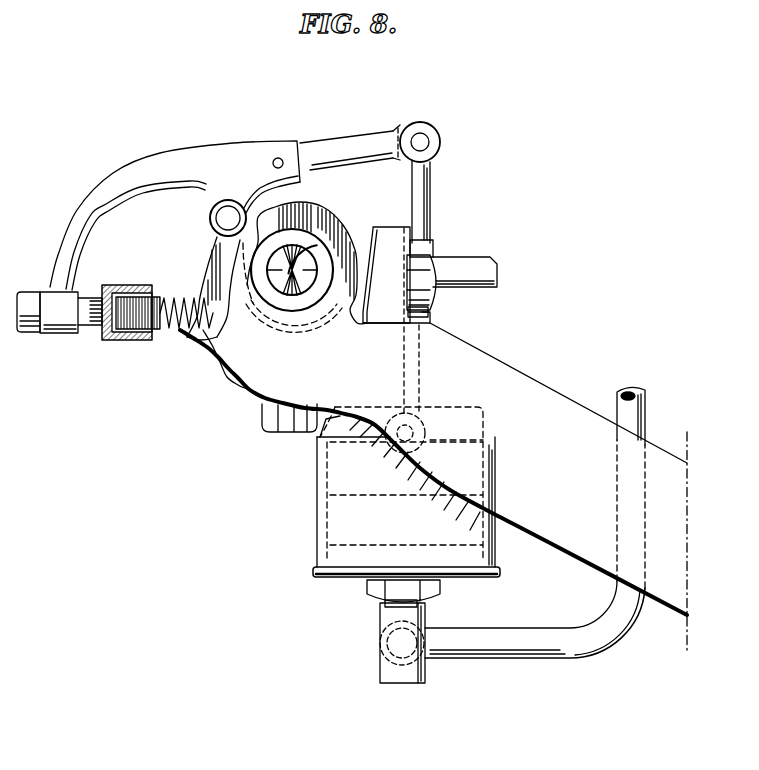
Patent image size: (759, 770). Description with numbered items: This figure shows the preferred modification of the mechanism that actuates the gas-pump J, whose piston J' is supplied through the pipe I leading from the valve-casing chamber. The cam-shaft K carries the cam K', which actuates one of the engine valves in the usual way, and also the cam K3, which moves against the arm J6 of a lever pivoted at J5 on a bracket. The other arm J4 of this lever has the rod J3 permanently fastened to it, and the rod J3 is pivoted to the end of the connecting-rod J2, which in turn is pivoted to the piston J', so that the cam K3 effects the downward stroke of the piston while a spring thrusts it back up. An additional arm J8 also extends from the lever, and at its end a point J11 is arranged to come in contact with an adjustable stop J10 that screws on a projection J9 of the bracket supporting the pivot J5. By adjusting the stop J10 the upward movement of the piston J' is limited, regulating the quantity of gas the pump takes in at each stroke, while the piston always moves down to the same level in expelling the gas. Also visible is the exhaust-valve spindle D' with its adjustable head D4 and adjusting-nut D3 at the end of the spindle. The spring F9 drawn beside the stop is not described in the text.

The gas-pump J is at (396, 466).
The pump-piston J' is at (406, 494).
The connecting-rod J2 is at (422, 211).
The rod J3 is at (357, 142).
The arm J4 is at (175, 215).
The pivot J5 is at (245, 219).
The arm J6 is at (226, 293).
The additional arm J8 is at (46, 289).
The projection J9 is at (167, 338).
The adjustable stop J10 is at (127, 302).
The point J11 is at (96, 327).
The spring F9 is at (188, 293).
The cam-shaft K is at (292, 270).
The cam K' is at (307, 258).
The cam K3 is at (272, 323).
The valve-spindle D' is at (465, 272).
The adjusting-nut D3 is at (430, 249).
The adjustable head D4 is at (385, 321).
The pipe I is at (512, 535).